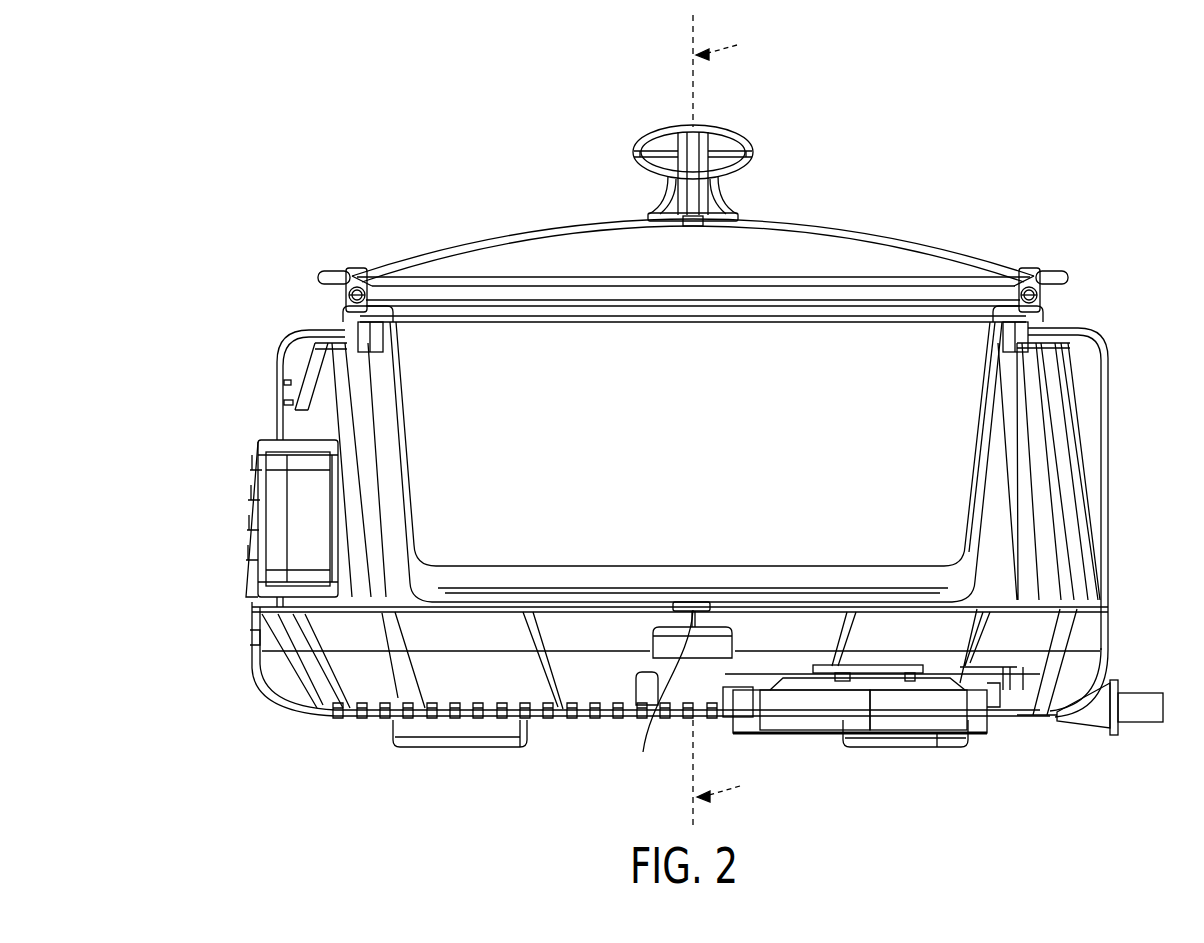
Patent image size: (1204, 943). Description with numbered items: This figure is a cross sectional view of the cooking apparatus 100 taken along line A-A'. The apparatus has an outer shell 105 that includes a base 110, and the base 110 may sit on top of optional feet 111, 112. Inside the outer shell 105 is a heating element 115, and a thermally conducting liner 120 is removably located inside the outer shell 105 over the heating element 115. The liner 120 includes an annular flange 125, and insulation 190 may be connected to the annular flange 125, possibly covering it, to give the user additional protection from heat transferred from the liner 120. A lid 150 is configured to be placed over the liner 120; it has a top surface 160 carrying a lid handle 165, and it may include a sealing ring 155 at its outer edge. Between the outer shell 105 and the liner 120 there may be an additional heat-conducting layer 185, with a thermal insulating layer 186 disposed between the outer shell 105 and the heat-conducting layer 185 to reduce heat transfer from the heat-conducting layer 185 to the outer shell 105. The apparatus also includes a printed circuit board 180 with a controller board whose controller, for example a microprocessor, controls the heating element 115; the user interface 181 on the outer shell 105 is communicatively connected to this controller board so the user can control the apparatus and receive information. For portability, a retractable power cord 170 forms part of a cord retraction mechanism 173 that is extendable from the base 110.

The cooking apparatus 100 is at (448, 70).
The outer shell 105 is at (1109, 485).
The base 110 is at (285, 716).
The foot 111 is at (915, 750).
The foot 112 is at (462, 750).
The heating element 115 is at (680, 691).
The liner 120 is at (979, 411).
The annular flange 125 is at (1067, 272).
The lid 150 is at (712, 260).
The sealing ring 155 is at (1029, 270).
The top surface 160 is at (850, 228).
The lid handle 165 is at (716, 126).
The retractable power cord 170 is at (1093, 731).
The cord retraction mechanism 173 is at (809, 723).
The printed circuit board 180 is at (256, 537).
The user interface 181 is at (258, 479).
The heat-conducting layer 185 is at (412, 569).
The thermal insulating layer 186 is at (1069, 394).
The insulation 190 is at (1042, 297).